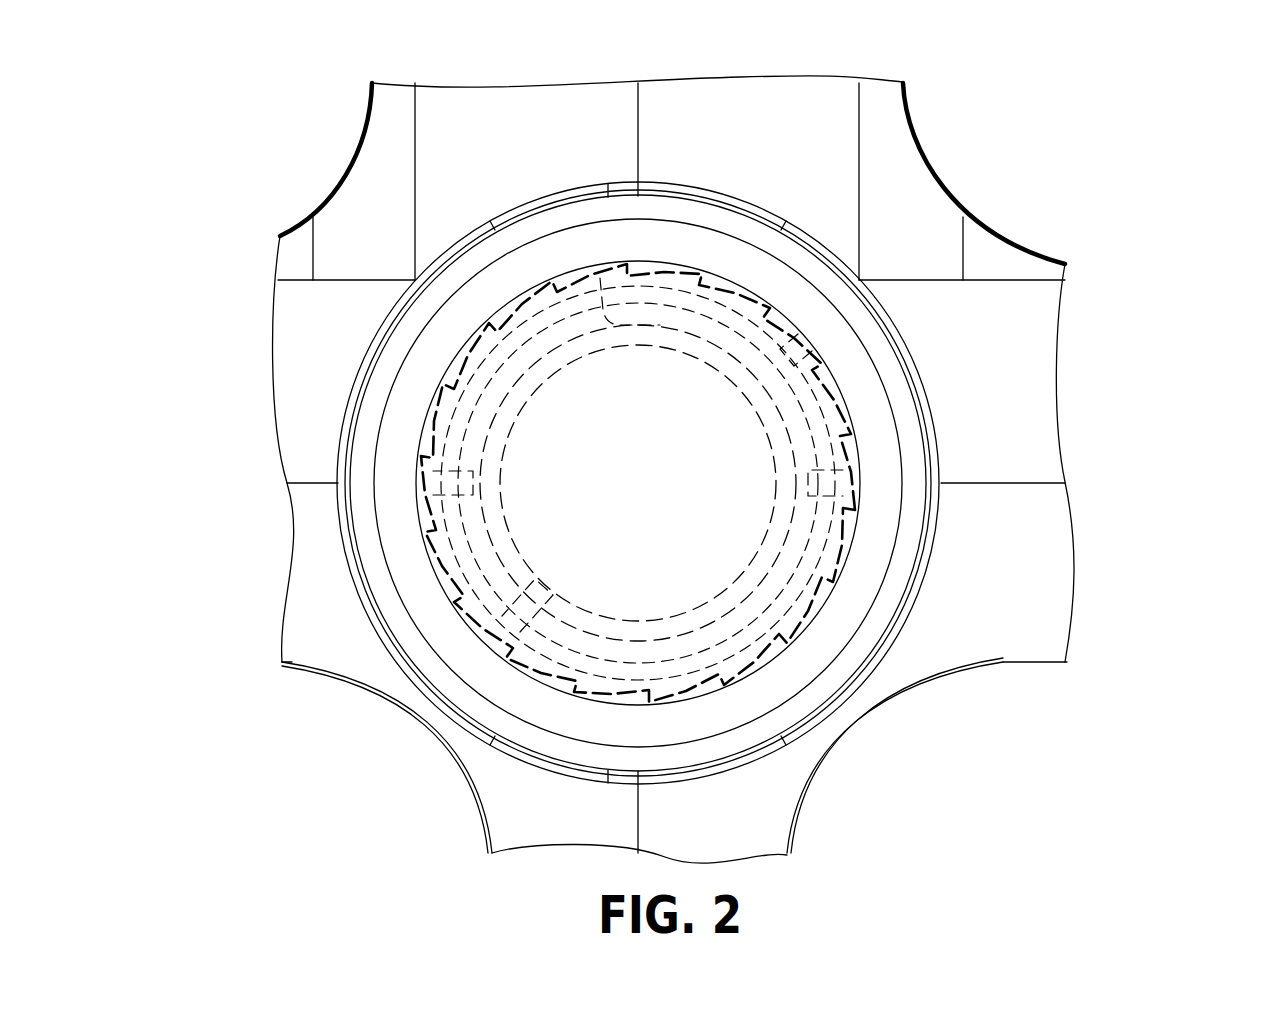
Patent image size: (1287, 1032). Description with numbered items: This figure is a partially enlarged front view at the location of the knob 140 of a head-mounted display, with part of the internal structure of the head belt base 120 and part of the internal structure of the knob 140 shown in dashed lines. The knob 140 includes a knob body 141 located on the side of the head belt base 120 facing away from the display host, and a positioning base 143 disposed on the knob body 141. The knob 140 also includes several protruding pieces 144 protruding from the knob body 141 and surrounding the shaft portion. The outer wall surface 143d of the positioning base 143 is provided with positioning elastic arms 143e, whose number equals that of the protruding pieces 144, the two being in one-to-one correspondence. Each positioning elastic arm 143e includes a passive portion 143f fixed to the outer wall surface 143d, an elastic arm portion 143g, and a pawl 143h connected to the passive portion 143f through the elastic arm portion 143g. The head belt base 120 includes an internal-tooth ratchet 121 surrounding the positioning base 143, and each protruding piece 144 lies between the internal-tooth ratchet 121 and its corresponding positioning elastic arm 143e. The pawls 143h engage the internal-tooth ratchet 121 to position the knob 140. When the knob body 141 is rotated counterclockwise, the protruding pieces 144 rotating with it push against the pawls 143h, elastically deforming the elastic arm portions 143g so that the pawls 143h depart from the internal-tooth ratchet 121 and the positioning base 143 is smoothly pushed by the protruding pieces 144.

The head belt base 120 is at (531, 100).
The internal-tooth ratchet 121 is at (422, 733).
The knob 140 is at (638, 399).
The knob body 141 is at (772, 270).
The positioning base 143 is at (760, 517).
The outer wall surface 143d is at (543, 587).
The positioning elastic arm 143e is at (463, 483).
The passive portion 143f is at (820, 480).
The elastic arm portion 143g is at (820, 365).
The pawl 143h is at (630, 295).
The protruding piece 144 is at (470, 365).